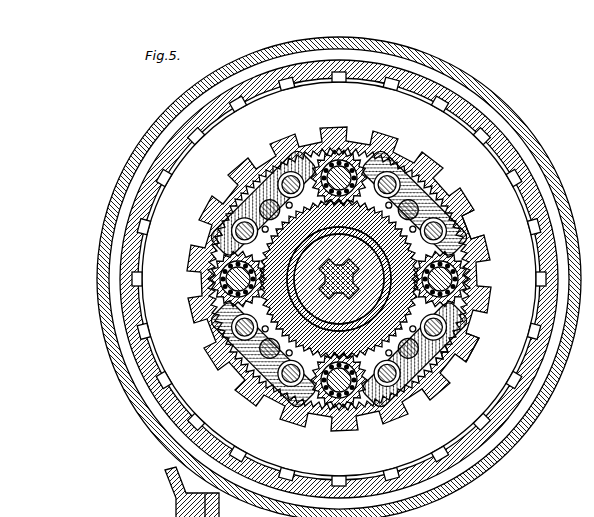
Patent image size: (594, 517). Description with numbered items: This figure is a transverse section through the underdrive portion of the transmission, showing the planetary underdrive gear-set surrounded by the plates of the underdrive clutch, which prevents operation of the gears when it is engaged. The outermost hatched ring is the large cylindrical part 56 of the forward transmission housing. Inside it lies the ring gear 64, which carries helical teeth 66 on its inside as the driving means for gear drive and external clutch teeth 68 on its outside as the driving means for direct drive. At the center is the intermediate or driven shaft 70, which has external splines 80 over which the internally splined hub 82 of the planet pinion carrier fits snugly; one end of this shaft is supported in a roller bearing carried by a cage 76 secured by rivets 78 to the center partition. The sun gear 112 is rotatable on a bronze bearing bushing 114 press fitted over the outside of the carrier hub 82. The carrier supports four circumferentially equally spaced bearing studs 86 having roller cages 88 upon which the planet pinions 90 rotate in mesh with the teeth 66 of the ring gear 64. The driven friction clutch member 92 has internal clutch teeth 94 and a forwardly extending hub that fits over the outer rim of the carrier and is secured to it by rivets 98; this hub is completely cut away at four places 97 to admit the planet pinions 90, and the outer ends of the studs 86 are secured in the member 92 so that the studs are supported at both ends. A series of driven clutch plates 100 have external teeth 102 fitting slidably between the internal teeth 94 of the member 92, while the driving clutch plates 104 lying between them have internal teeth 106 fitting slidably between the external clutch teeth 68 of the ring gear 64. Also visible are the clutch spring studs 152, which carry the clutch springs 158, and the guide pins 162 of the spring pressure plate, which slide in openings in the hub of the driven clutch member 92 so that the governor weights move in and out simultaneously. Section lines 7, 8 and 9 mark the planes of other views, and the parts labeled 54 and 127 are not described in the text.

The section line 7- 7 is at (388, 143).
The section line 8- 8 is at (228, 176).
The section line 9- 9 is at (217, 360).
The support bracket 54 is at (167, 471).
The large cylindrical part 56 is at (137, 143).
The ring gear 64 is at (402, 390).
The helical teeth 66 is at (437, 358).
The external clutch teeth 68 is at (462, 342).
The intermediate shaft 70 is at (342, 279).
The cage 76 is at (301, 232).
The rivets 78 is at (326, 252).
The external splines 80 is at (349, 211).
The internally splined hub 82 is at (331, 232).
The bearing studs 86 is at (203, 271).
The roller cages 88 is at (459, 271).
The planet pinions 90 is at (259, 318).
The driven friction clutch member 92 is at (236, 452).
The internal clutch teeth 94 is at (310, 478).
The cut-away places 97 is at (205, 231).
The rivets 98 is at (229, 194).
The driven clutch plates 100 is at (500, 172).
The external teeth 102 is at (532, 207).
The driving clutch plates 104 is at (538, 263).
The internal teeth 106 is at (476, 316).
The sun gear 112 is at (379, 341).
The bronze bearing bushing 114 is at (282, 341).
The planet gear 127 is at (315, 346).
The clutch spring stud 152 is at (440, 220).
The clutch springs 158 is at (431, 196).
The guide pins 162 is at (273, 212).